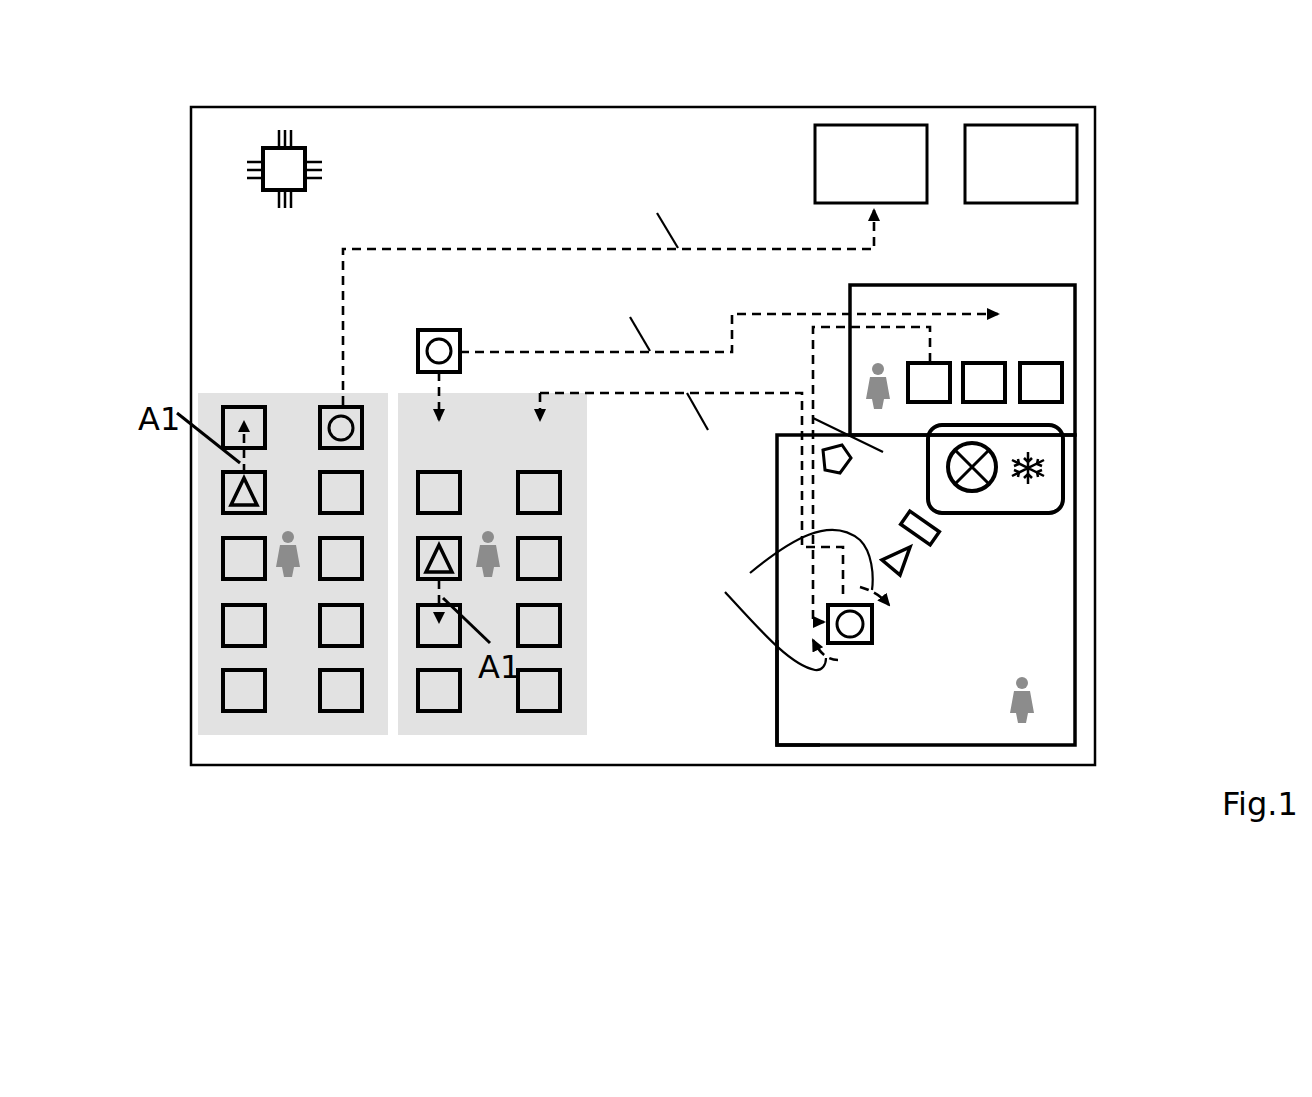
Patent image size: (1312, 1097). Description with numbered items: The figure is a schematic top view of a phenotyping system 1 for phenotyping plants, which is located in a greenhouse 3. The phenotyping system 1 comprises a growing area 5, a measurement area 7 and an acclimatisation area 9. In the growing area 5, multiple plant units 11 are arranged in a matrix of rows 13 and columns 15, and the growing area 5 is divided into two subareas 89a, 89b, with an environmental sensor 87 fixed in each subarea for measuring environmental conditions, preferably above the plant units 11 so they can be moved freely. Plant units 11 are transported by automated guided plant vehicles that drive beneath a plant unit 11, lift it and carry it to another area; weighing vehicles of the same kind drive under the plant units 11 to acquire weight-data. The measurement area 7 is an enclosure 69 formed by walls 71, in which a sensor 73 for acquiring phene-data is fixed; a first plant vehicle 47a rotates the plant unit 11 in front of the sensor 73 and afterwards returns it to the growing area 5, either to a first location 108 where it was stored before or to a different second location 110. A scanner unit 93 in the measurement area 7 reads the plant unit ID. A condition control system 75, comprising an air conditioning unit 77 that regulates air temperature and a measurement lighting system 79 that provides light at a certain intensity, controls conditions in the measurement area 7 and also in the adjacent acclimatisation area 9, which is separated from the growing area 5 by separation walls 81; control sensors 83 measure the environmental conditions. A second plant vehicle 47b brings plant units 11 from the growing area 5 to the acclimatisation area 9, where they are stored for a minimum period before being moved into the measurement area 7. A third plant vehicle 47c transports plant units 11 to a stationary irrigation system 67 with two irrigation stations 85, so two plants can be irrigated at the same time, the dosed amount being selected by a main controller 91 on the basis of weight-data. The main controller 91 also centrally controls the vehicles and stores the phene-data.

The phenotyping system 1 is at (1206, 159).
The greenhouse 3 is at (1110, 240).
The growing area 5 is at (393, 742).
The measurement area 7 is at (946, 710).
The acclimatisation area 9 is at (1197, 328).
The plant unit 11 is at (326, 398).
The row 13 is at (205, 493).
The column 15 is at (243, 742).
The first plant vehicle 47a is at (872, 631).
The second plant vehicle 47b is at (458, 345).
The third plant vehicle 47c is at (318, 440).
The irrigation system 67 is at (948, 114).
The enclosure 69 is at (771, 658).
The wall 71 is at (798, 692).
The sensor 73 is at (940, 559).
The condition control system 75 is at (1010, 519).
The air conditioning unit 77 is at (1052, 462).
The measurement lighting system 79 is at (995, 495).
The separation wall 81 is at (1023, 281).
The control sensor 83 is at (862, 383).
The irrigation station 85 is at (852, 121).
The environmental sensor 87 is at (300, 533).
The subarea 89a is at (303, 724).
The subarea 89b is at (494, 707).
The main controller 91 is at (314, 156).
The scanner unit 93 is at (842, 480).
The first location 108 is at (545, 446).
The second location 110 is at (433, 432).